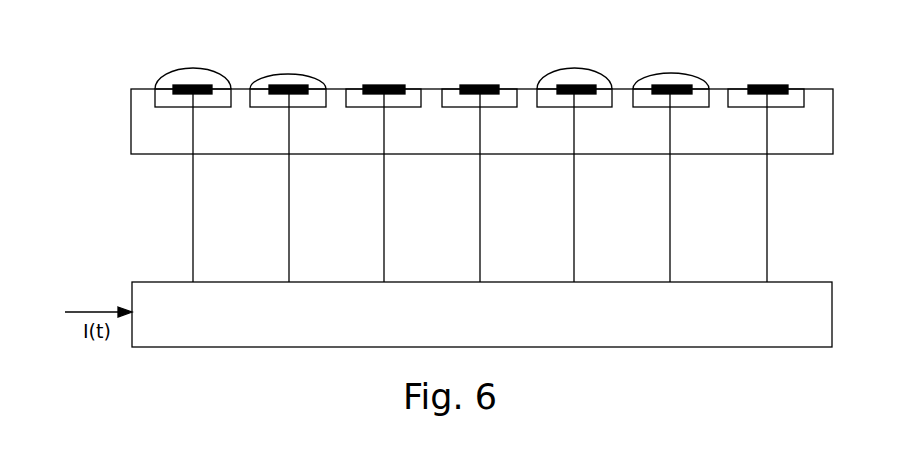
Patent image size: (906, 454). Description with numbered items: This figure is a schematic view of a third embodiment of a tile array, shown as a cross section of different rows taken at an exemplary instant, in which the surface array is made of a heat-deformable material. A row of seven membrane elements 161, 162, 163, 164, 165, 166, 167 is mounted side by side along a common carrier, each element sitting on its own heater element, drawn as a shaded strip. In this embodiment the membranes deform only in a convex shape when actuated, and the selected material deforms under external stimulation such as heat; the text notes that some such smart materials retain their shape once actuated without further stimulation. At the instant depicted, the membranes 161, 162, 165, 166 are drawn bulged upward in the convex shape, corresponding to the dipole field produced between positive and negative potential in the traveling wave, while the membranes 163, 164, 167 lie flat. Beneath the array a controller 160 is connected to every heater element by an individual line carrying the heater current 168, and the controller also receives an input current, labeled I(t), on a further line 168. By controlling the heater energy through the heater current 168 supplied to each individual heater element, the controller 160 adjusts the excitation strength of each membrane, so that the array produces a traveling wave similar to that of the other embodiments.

The controller 160 is at (227, 347).
The membrane 161 is at (198, 68).
The membrane 162 is at (288, 74).
The light emitting element 163 is at (388, 84).
The light emitting element 164 is at (483, 84).
The membrane 165 is at (572, 68).
The membrane 166 is at (653, 74).
The light emitting element 167 is at (762, 83).
The heater current 168 is at (193, 170).